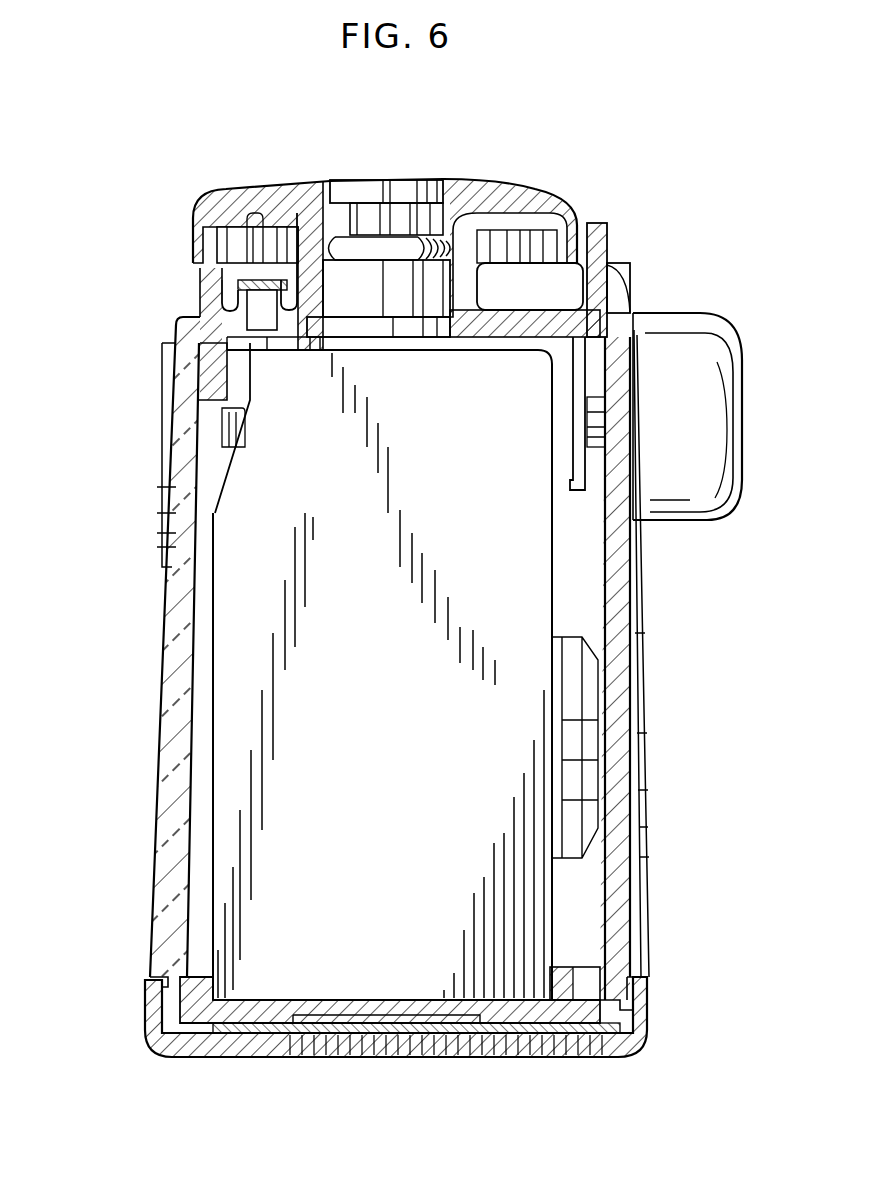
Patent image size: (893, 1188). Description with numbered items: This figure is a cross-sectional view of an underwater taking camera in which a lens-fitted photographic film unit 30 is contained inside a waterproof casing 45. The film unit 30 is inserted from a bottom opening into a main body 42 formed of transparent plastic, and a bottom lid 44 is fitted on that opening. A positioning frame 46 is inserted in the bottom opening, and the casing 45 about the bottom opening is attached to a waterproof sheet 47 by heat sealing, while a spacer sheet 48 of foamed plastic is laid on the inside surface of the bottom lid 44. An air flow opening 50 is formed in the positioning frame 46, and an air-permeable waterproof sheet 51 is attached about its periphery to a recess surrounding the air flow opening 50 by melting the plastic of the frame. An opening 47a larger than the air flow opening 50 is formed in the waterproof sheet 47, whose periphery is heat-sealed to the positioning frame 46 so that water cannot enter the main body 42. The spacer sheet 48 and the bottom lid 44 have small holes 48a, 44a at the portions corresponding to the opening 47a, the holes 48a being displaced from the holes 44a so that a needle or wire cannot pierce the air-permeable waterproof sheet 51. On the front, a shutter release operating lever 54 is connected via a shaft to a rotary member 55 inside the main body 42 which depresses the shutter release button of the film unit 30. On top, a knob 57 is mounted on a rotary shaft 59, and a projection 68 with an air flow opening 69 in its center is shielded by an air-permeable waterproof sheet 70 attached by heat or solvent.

The lens-fitted photographic film unit 30 is at (206, 778).
The main body 42 is at (168, 691).
The bottom lid 44 is at (150, 1038).
The small holes 44a is at (427, 1058).
The waterproof casing 45 is at (623, 223).
The positioning frame 46 is at (265, 997).
The waterproof sheet 47 is at (602, 1058).
The opening 47a is at (492, 1058).
The spacer sheet 48 is at (215, 1058).
The small holes 48a is at (365, 1058).
The air flow opening 50 is at (375, 1010).
The air-permeable waterproof sheet 51 is at (405, 1000).
The shutter release operating lever 54 is at (683, 521).
The rotary member 55 is at (575, 460).
The knob 57 is at (478, 210).
The rotary shaft 59 is at (376, 272).
The projection 68 is at (231, 303).
The air flow opening 69 is at (260, 325).
The air-permeable waterproof sheet 70 is at (267, 277).